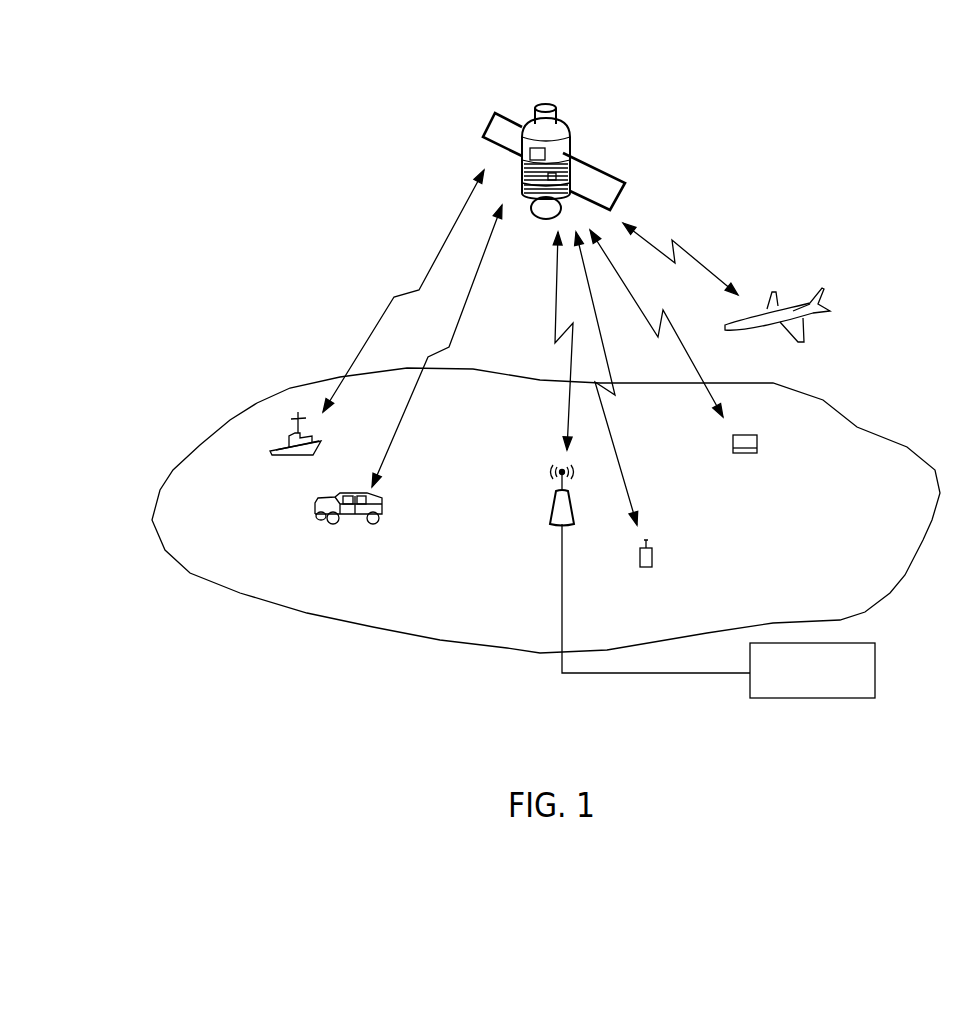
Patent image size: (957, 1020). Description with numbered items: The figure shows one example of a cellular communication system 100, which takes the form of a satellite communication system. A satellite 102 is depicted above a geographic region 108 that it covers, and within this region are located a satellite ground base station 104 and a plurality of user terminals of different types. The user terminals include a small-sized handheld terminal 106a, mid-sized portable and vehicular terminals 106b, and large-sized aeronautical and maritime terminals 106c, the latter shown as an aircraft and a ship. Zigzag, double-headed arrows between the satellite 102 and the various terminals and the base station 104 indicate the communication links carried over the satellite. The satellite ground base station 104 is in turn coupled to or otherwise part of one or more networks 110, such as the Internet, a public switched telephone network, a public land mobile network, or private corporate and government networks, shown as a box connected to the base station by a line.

The cellular communication system 100 is at (338, 130).
The satellite 102 is at (588, 163).
The satellite ground base station 104 is at (551, 502).
The small-sized handheld terminal 106a is at (655, 556).
The mid-sized portable and vehicular terminal 106b is at (351, 520).
The large-sized aeronautical and maritime terminal 106c is at (293, 458).
The geographic region 108 is at (298, 390).
The network 110 is at (813, 699).